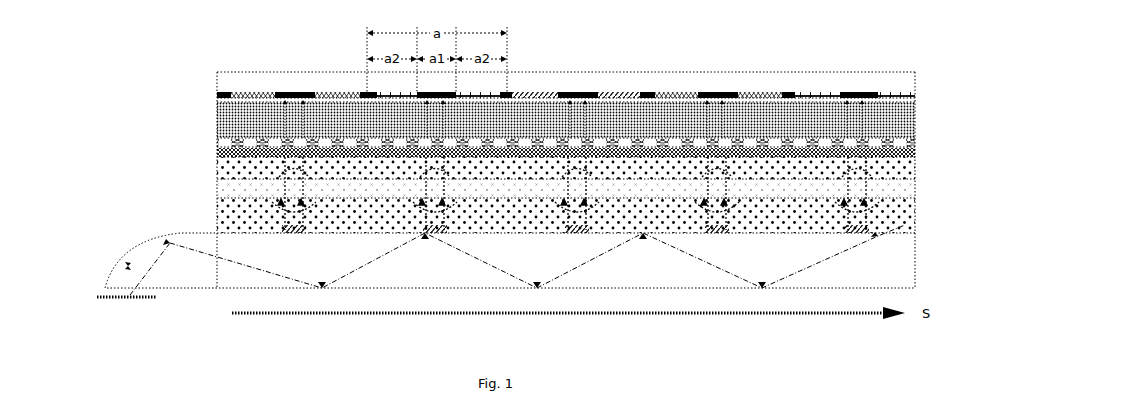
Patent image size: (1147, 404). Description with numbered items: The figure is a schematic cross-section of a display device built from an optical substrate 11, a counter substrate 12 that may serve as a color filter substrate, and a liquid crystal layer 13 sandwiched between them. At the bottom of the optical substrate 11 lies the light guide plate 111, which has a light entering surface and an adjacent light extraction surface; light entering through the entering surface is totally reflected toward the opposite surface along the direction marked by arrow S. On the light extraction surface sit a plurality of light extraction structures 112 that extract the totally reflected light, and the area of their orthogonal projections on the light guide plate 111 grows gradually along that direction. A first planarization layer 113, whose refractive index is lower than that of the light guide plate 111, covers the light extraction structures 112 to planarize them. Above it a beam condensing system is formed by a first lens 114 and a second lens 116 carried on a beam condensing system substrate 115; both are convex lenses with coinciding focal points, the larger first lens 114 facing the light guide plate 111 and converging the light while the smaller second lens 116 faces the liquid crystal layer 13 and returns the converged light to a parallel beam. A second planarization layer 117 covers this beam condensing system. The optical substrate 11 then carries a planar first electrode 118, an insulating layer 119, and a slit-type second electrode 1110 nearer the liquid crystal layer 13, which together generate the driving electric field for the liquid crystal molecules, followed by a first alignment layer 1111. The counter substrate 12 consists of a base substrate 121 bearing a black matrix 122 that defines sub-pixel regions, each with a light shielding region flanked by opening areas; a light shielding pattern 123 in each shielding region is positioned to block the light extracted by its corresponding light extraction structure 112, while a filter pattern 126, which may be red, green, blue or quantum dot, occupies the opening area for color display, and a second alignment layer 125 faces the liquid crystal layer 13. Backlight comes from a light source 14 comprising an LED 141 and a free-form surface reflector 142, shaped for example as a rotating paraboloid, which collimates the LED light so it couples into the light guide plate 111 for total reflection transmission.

The optical substrate 11 is at (216, 183).
The counter substrate 12 is at (209, 85).
The liquid crystal layer 13 is at (216, 117).
The light source 14 is at (136, 247).
The light guide plate 111 is at (915, 285).
The light extraction structures 112 is at (883, 234).
The first planarization layer 113 is at (885, 228).
The first lens 114 is at (905, 213).
The beam condensing system substrate 115 is at (905, 200).
The second lens 116 is at (915, 185).
The second planarization layer 117 is at (915, 172).
The first electrode 118 is at (915, 153).
The insulating layer 119 is at (915, 147).
The second electrode 1110 is at (915, 143).
The first alignment layer 1111 is at (915, 132).
The base substrate 121 is at (915, 82).
The black matrix 122 is at (789, 92).
The light shielding pattern 123 is at (718, 96).
The second alignment layer 125 is at (915, 100).
The filter pattern 126 is at (254, 92).
The LED 141 is at (132, 296).
The free-form surface reflector 142 is at (124, 266).